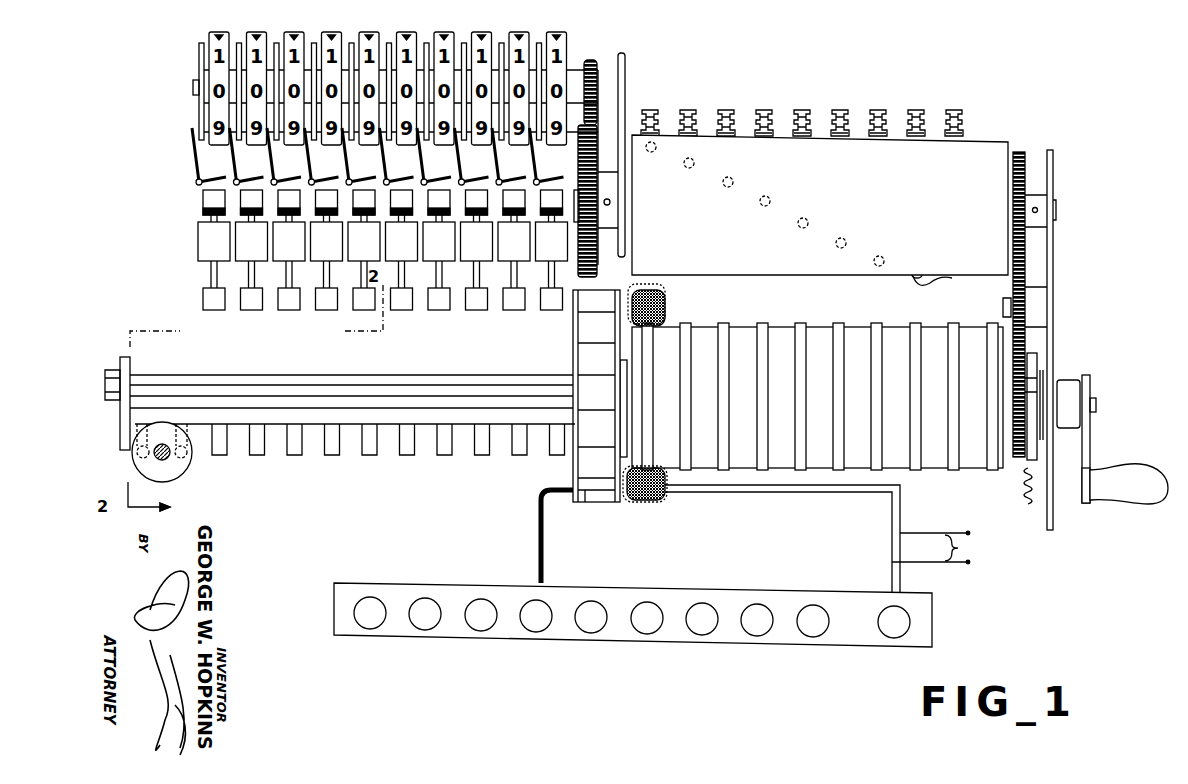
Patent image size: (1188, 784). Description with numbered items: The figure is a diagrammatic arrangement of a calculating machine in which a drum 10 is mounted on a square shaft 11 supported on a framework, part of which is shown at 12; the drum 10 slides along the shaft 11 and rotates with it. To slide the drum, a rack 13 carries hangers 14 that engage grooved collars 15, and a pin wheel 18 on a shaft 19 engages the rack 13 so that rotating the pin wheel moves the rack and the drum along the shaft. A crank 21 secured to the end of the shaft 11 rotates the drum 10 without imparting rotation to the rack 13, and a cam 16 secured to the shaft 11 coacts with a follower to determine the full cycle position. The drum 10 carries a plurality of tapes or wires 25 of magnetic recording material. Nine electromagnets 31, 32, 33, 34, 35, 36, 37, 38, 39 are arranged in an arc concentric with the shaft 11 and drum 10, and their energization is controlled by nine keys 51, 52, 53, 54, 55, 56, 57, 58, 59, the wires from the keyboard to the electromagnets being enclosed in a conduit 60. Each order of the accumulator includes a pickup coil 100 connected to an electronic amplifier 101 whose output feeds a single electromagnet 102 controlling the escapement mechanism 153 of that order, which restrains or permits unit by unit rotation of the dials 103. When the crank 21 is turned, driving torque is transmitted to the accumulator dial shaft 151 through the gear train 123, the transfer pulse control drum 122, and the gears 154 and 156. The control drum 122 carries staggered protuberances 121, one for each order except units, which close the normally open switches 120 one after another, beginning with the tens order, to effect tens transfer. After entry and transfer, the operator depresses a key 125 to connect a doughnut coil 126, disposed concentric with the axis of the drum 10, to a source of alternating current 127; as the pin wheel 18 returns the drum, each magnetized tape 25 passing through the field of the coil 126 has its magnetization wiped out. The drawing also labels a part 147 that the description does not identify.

The drum 10 is at (820, 332).
The square shaft 11 is at (445, 378).
The framework 12 is at (1053, 266).
The rack 13 is at (345, 457).
The hangers 14 is at (627, 425).
The grooved collars 15 is at (130, 372).
The cam 16 is at (1037, 368).
The pin wheel 18 is at (172, 478).
The shaft 19 is at (172, 458).
The crank 21 is at (1134, 470).
The tapes or wires 25 is at (723, 328).
The electromagnet 31 is at (607, 295).
The electromagnet 32 is at (586, 306).
The electromagnet 33 is at (596, 333).
The electromagnet 34 is at (596, 363).
The electromagnet 35 is at (596, 398).
The electromagnet 36 is at (596, 435).
The electromagnet 37 is at (596, 466).
The electromagnet 38 is at (590, 484).
The electromagnet 39 is at (598, 500).
The key 51 is at (370, 629).
The key 52 is at (425, 630).
The key 53 is at (481, 631).
The key 54 is at (536, 632).
The key 55 is at (591, 633).
The key 56 is at (647, 634).
The key 57 is at (702, 635).
The key 58 is at (757, 636).
The key 59 is at (813, 637).
The conduit 60 is at (545, 548).
The pickup coil 100 is at (523, 312).
The electronic amplifier 101 is at (199, 256).
The electromagnet 102 is at (203, 194).
The dials 103 is at (478, 34).
The normally open switches 120 is at (918, 110).
The protuberances 121 is at (930, 282).
The transfer pulse control drum 122 is at (665, 265).
The gear train 123 is at (1010, 263).
The key 125 is at (894, 638).
The doughnut coil 126 is at (658, 497).
The source of alternating current 127 is at (830, 539).
The bracket 147 is at (627, 64).
The accumulator dial shaft 151 is at (195, 85).
The escapement mechanism 153 is at (188, 150).
The gear 154 is at (578, 183).
The gear 156 is at (590, 57).